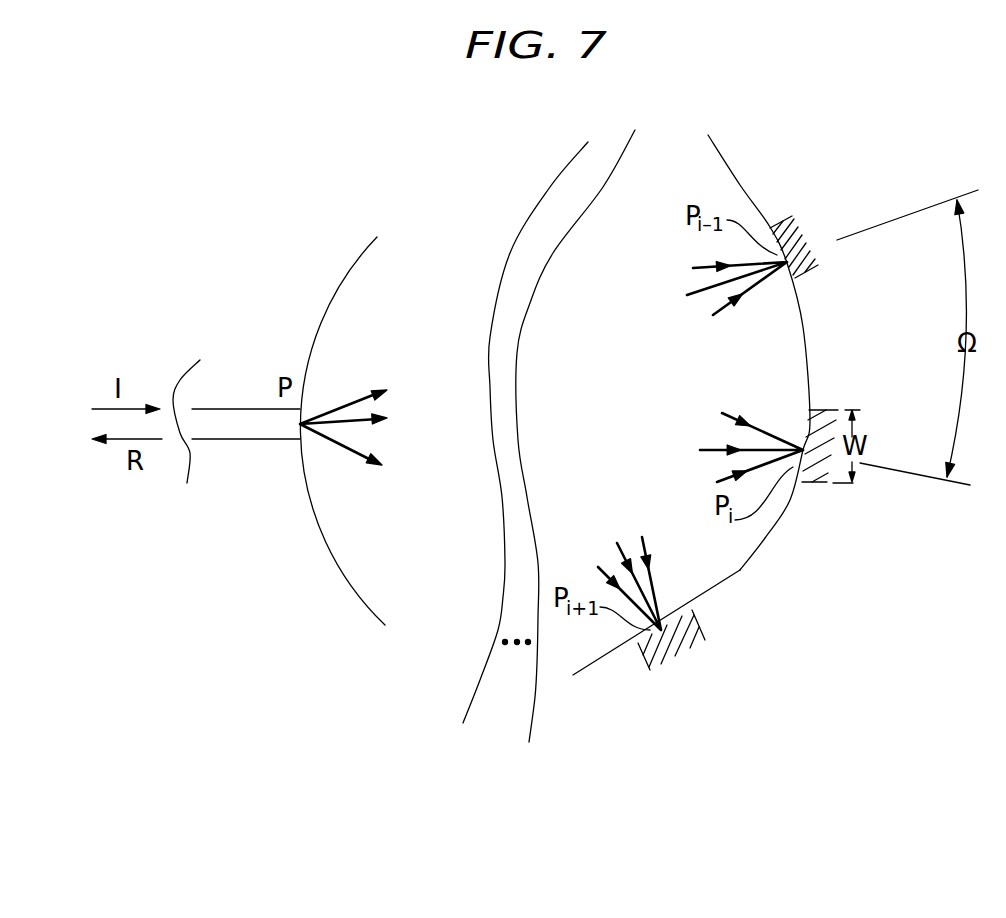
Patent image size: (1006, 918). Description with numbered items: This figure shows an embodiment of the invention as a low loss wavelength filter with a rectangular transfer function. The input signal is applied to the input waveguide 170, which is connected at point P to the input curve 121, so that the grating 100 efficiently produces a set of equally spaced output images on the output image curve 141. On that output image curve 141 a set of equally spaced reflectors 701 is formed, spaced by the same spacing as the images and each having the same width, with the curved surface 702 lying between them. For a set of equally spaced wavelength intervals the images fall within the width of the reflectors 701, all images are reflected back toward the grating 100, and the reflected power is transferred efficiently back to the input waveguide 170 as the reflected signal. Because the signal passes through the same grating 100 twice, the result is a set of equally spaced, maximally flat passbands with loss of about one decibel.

The grating 100 is at (855, 797).
The input curve 121 is at (328, 567).
The output image curve 141 is at (583, 677).
The input waveguide 170 is at (247, 440).
The reflectors 701 is at (812, 230).
The curved output surface 702 is at (800, 307).